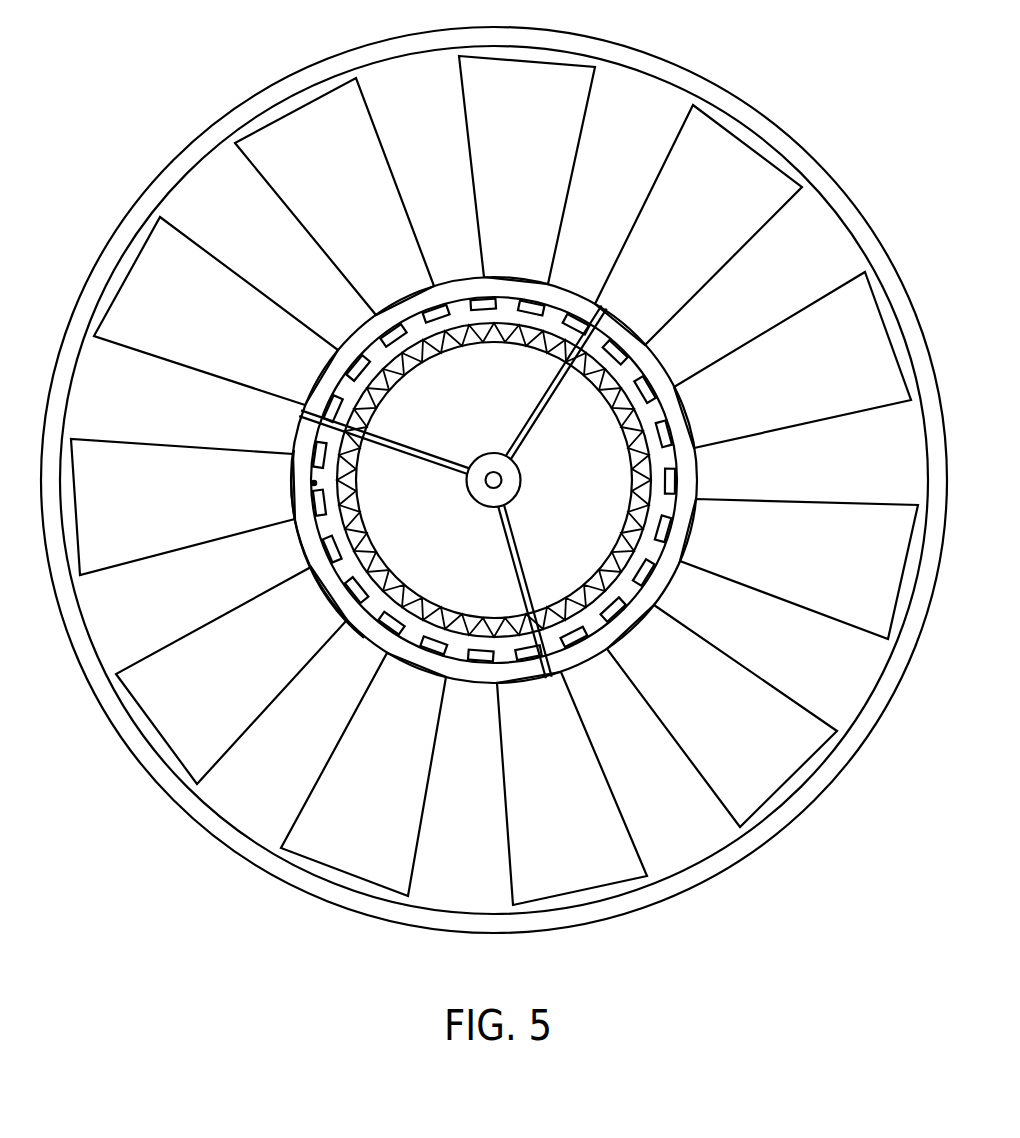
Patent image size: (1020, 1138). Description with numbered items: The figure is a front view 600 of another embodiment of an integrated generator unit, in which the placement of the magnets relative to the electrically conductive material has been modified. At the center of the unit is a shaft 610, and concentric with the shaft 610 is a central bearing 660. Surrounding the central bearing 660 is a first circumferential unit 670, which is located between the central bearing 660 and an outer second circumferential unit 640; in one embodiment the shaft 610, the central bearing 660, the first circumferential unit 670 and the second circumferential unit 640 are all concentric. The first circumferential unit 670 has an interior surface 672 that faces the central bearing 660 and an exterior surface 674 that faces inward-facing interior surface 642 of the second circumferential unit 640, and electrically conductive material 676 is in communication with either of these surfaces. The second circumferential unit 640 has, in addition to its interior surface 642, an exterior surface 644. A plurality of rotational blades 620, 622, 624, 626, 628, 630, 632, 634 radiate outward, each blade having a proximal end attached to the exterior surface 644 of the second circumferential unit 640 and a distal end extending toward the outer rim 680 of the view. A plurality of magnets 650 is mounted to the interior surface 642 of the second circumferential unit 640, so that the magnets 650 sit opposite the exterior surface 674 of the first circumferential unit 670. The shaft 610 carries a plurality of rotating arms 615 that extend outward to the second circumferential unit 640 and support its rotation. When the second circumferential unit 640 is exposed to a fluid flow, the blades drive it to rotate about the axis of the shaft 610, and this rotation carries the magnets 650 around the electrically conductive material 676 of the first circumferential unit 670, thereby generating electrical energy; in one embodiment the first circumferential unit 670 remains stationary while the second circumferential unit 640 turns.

The front view of integrated generator unit 600 is at (485, 480).
The shaft 610 is at (500, 484).
The rotating arms 615 is at (541, 412).
The rotational blade 620 is at (506, 123).
The rotational blade 622 is at (692, 213).
The rotational blade 624 is at (799, 365).
The rotational blade 626 is at (814, 566).
The rotational blade 628 is at (706, 728).
The rotational blade 630 is at (549, 843).
The rotational blade 632 is at (352, 818).
The rotational blade 634 is at (206, 685).
The second circumferential unit 640 is at (310, 545).
The interior surface 642 is at (309, 482).
The exterior surface 644 is at (328, 590).
The magnets 650 is at (313, 507).
The central bearing 660 is at (497, 459).
The first circumferential unit 670 is at (494, 529).
The interior surface 672 is at (423, 597).
The exterior surface 674 is at (418, 618).
The electrically conductive material 676 is at (470, 630).
The outer rim 680 is at (70, 616).